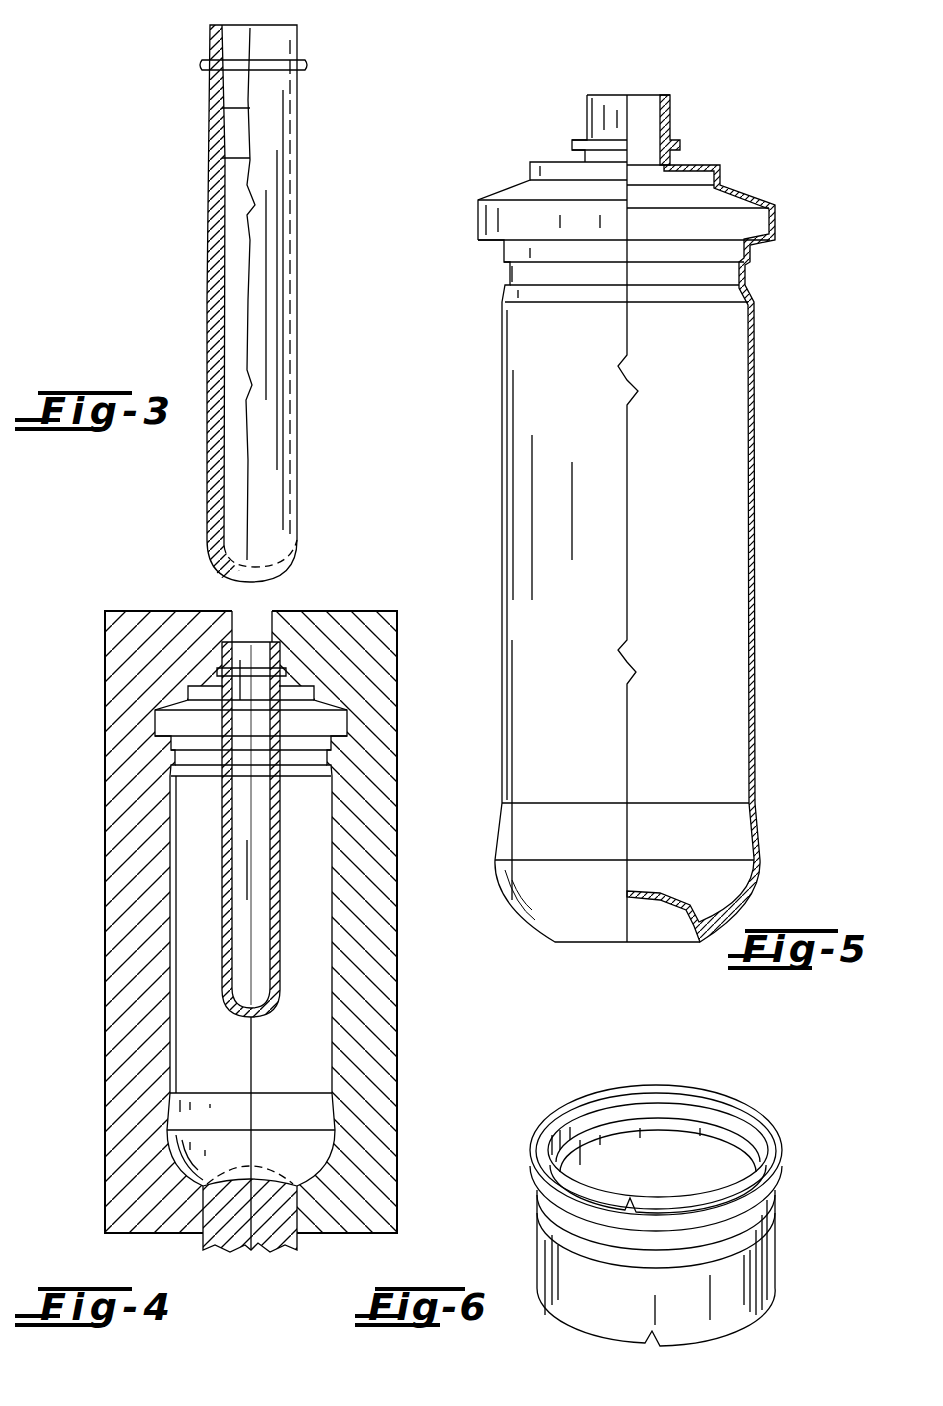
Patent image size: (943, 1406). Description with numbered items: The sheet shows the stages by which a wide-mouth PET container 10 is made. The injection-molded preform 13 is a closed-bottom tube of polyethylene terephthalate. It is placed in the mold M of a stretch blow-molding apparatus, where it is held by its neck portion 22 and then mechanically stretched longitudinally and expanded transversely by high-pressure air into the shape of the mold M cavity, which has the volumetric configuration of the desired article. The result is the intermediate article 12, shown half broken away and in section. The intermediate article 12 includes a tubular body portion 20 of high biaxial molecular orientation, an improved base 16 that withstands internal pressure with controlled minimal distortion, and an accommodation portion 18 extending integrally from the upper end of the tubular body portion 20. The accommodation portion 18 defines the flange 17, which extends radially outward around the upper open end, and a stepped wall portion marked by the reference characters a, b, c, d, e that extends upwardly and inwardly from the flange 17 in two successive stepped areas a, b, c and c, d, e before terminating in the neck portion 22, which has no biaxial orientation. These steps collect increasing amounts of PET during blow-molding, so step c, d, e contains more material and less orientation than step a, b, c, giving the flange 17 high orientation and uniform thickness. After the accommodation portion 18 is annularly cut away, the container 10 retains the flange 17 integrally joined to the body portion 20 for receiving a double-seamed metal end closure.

In FIG. 6, the container 10 is at (639, 1215).
In FIG. 5, the intermediate article 12 is at (633, 512).
In FIG. 3, the injection-molded preform 13 is at (207, 270).
In FIG. 4, the injection-molded preform 13 is at (224, 862).
In FIG. 5, the base 16 is at (782, 848).
In FIG. 5, the flange 17 is at (756, 250).
In FIG. 6, the flange 17 is at (545, 1136).
In FIG. 5, the accommodation portion 18 is at (492, 186).
In FIG. 5, the tubular body portion 20 is at (758, 520).
In FIG. 6, the tubular body portion 20 is at (745, 1262).
In FIG. 5, the neck portion 22 is at (585, 118).
In FIG. 4, the mold M is at (125, 925).
In FIG. 5, the stepped area a is at (768, 247).
In FIG. 5, the stepped area b is at (777, 205).
In FIG. 5, the stepped area c is at (718, 196).
In FIG. 5, the stepped area d is at (718, 167).
In FIG. 5, the stepped area e is at (662, 180).